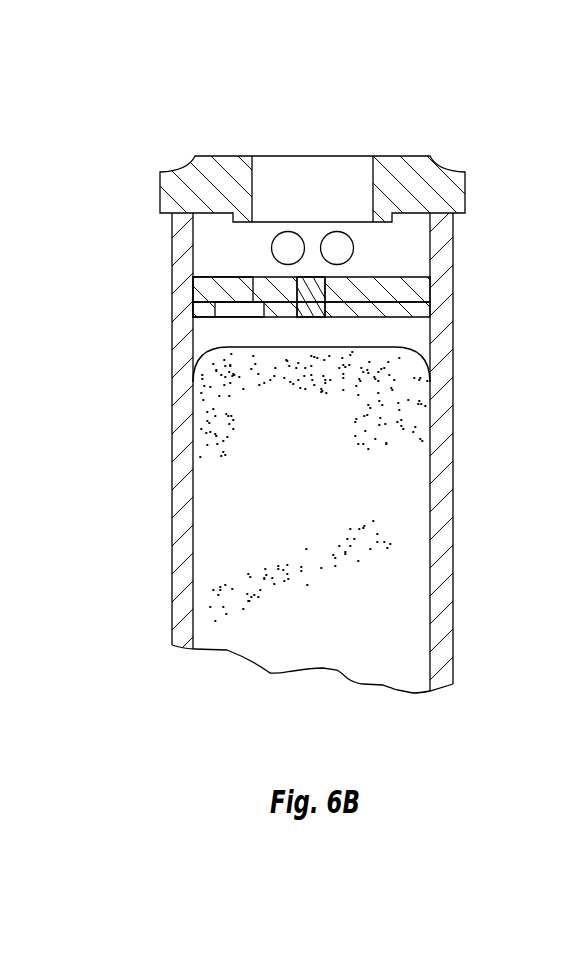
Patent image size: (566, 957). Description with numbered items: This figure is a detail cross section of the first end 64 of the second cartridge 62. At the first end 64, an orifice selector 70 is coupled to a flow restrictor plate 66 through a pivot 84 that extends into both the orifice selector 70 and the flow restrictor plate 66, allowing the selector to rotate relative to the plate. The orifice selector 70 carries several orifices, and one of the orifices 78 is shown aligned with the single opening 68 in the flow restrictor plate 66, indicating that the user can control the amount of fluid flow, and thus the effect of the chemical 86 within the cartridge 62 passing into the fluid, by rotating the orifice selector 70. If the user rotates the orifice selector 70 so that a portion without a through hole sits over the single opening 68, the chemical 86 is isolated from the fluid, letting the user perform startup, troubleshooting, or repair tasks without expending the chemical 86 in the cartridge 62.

The second cartridge 62 is at (177, 124).
The first end 64 is at (452, 229).
The flow restrictor plate 66 is at (410, 310).
The single opening 68 is at (227, 308).
The orifice selector 70 is at (405, 290).
The orifice 78 is at (238, 289).
The pivot 84 is at (308, 303).
The chemical 86 is at (228, 525).